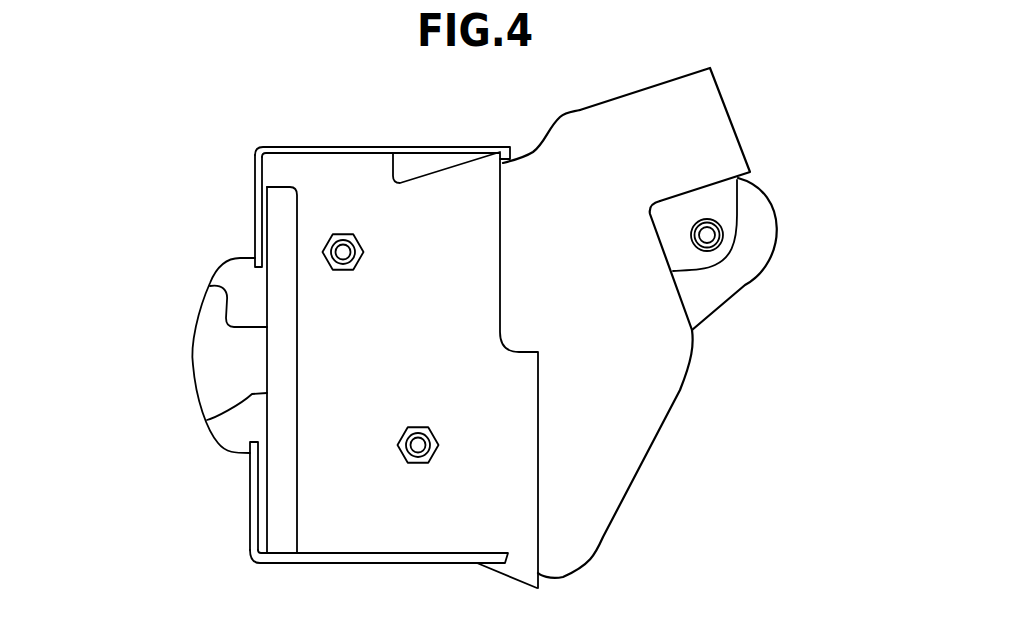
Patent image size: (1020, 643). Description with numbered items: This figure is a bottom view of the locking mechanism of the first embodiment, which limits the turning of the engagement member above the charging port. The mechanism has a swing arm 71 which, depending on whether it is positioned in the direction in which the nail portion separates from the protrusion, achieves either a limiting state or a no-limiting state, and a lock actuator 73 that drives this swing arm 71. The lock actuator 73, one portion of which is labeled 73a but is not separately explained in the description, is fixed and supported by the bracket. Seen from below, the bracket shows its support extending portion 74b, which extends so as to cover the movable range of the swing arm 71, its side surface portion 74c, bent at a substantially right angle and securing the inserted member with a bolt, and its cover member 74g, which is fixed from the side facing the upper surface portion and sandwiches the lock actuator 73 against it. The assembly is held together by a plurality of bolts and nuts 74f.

The swing arm 71 is at (208, 353).
The lock actuator 73 is at (692, 387).
The mounting portion of arm 73a is at (727, 88).
The support extending portion 74b is at (222, 267).
The side surface portion 74c is at (250, 487).
The nuts 74f is at (342, 271).
The cover member 74g is at (383, 533).